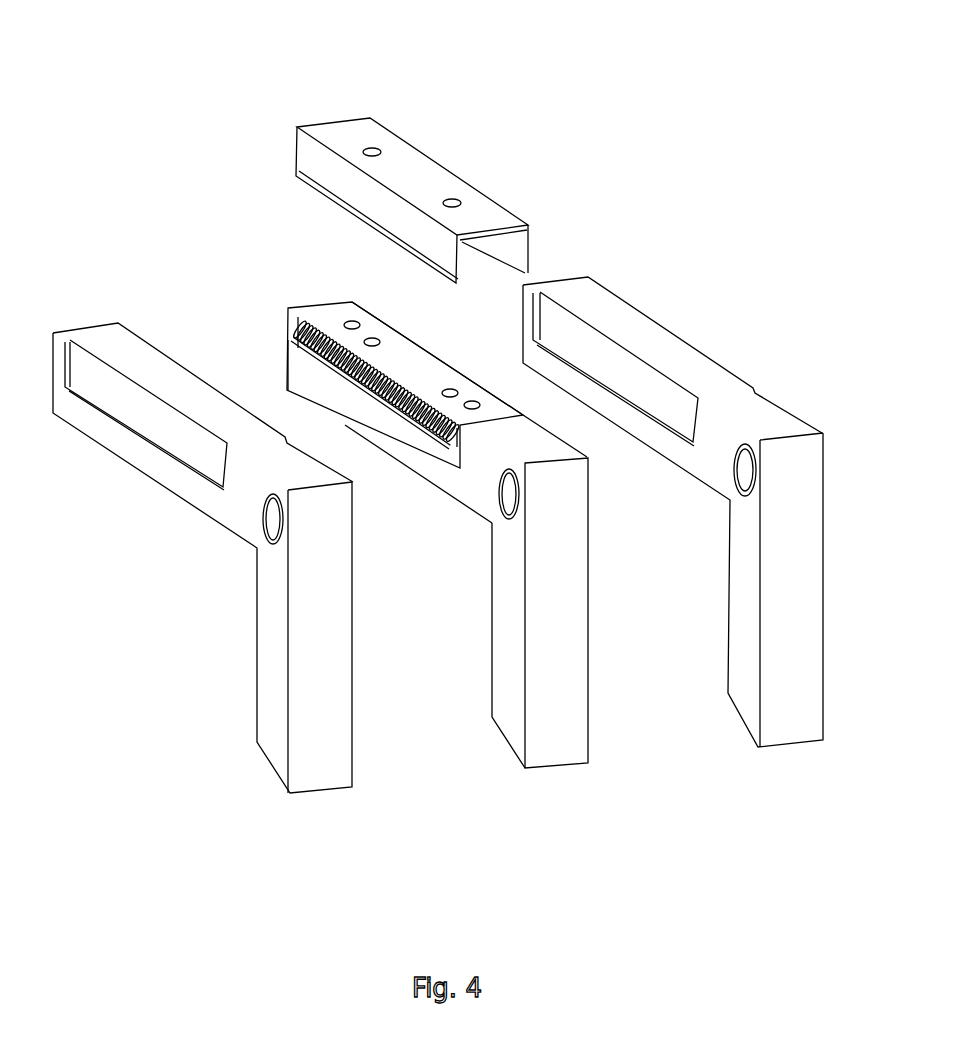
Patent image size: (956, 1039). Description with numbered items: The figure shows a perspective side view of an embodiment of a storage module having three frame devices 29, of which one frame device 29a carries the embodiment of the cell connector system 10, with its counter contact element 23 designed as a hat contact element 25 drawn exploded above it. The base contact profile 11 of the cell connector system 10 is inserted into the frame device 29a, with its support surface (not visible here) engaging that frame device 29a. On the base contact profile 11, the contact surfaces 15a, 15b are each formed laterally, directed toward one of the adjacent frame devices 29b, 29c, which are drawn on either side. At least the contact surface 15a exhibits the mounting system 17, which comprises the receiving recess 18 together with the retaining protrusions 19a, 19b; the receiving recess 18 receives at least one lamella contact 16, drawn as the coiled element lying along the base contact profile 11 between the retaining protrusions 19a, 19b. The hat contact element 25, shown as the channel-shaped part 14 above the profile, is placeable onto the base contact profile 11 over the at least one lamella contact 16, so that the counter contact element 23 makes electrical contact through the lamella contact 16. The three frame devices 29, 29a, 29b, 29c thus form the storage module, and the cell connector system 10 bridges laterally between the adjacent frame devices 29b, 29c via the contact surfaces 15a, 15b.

The cell connector system 10 is at (212, 208).
The base contact profile 11 is at (279, 320).
The block 14 is at (440, 390).
The contact surface 15a is at (463, 450).
The contact surface 15b is at (450, 367).
The lamella contact 16 is at (429, 434).
The mounting system 17 is at (501, 459).
The receiving recess 18 is at (501, 459).
The retaining protrusion 19a is at (314, 327).
The retaining protrusion 19b is at (287, 372).
The counter contact element 23 is at (387, 127).
The hat contact element 25 is at (456, 153).
The frame device 29 is at (438, 535).
The frame device 29a is at (537, 608).
The frame device 29b is at (303, 590).
The frame device 29c is at (772, 578).